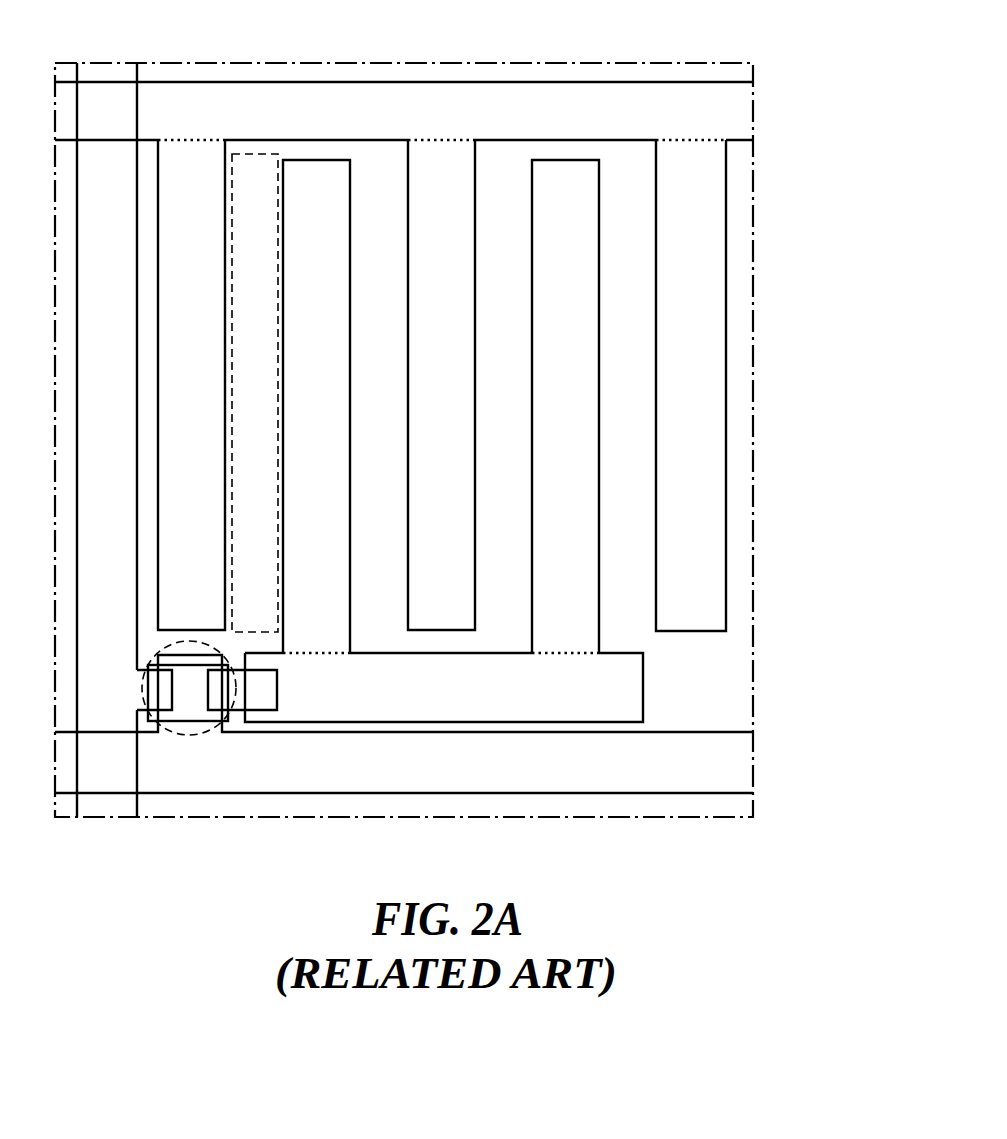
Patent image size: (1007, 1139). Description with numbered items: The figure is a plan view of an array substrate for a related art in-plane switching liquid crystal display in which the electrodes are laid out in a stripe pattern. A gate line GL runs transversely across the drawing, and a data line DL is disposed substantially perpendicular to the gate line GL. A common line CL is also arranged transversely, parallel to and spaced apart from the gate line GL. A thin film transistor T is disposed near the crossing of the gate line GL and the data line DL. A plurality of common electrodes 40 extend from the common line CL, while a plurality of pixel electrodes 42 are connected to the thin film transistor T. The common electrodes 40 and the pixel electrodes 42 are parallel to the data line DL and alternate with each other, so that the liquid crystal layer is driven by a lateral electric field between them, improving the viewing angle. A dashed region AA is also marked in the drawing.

The common line CL is at (753, 82).
The gate line GL is at (753, 732).
The data line DL is at (137, 817).
The thin film transistor T is at (188, 735).
The region AA is at (252, 153).
The common electrodes 40 is at (195, 253).
The pixel electrodes 42 is at (322, 425).